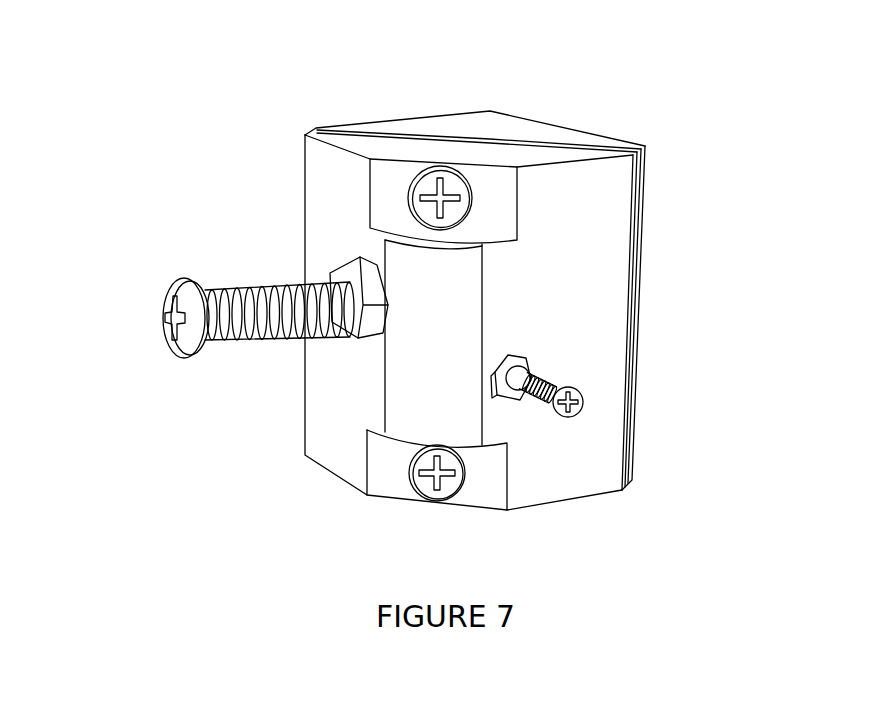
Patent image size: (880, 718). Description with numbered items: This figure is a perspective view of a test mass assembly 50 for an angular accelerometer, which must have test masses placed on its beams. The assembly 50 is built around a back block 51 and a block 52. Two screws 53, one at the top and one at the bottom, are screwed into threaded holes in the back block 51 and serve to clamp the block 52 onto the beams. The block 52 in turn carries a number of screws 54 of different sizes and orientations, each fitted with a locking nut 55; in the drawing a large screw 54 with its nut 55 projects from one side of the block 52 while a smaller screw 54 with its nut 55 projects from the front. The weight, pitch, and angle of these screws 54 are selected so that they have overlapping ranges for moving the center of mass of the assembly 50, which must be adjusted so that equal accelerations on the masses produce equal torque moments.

The test mass assembly 50 is at (388, 290).
The back block 51 is at (505, 122).
The block 52 is at (583, 158).
The screws 53 is at (435, 190).
The screws 54 is at (178, 345).
The locking nuts 55 is at (340, 268).